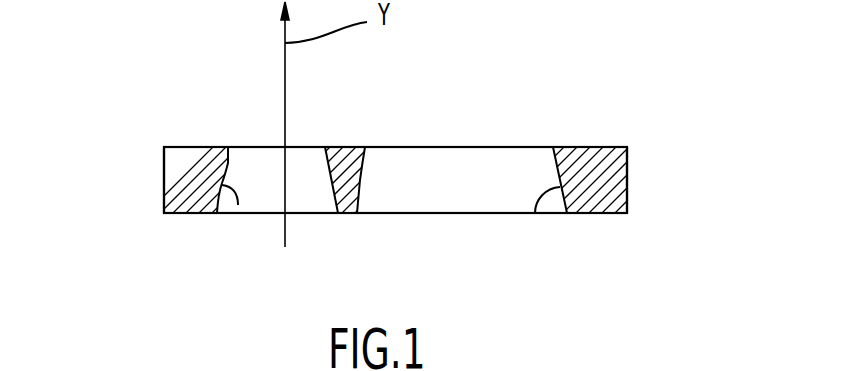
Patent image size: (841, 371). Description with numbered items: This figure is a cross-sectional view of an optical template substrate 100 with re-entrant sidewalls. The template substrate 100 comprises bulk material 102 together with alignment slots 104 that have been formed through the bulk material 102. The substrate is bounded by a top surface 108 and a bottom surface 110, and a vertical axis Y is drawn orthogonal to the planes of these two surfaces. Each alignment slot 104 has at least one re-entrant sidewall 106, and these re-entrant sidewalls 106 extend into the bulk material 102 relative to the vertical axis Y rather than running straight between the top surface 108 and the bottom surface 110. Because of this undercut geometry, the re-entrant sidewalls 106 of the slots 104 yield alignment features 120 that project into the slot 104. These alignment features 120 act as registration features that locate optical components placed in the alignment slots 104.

The optical template substrate 100 is at (652, 110).
The bulk material 102 is at (164, 177).
The alignment slots 104 is at (418, 130).
The re-entrant sidewall 106 is at (238, 205).
The top surface 108 is at (179, 147).
The bottom surface 110 is at (182, 214).
The alignment features 120 is at (324, 147).